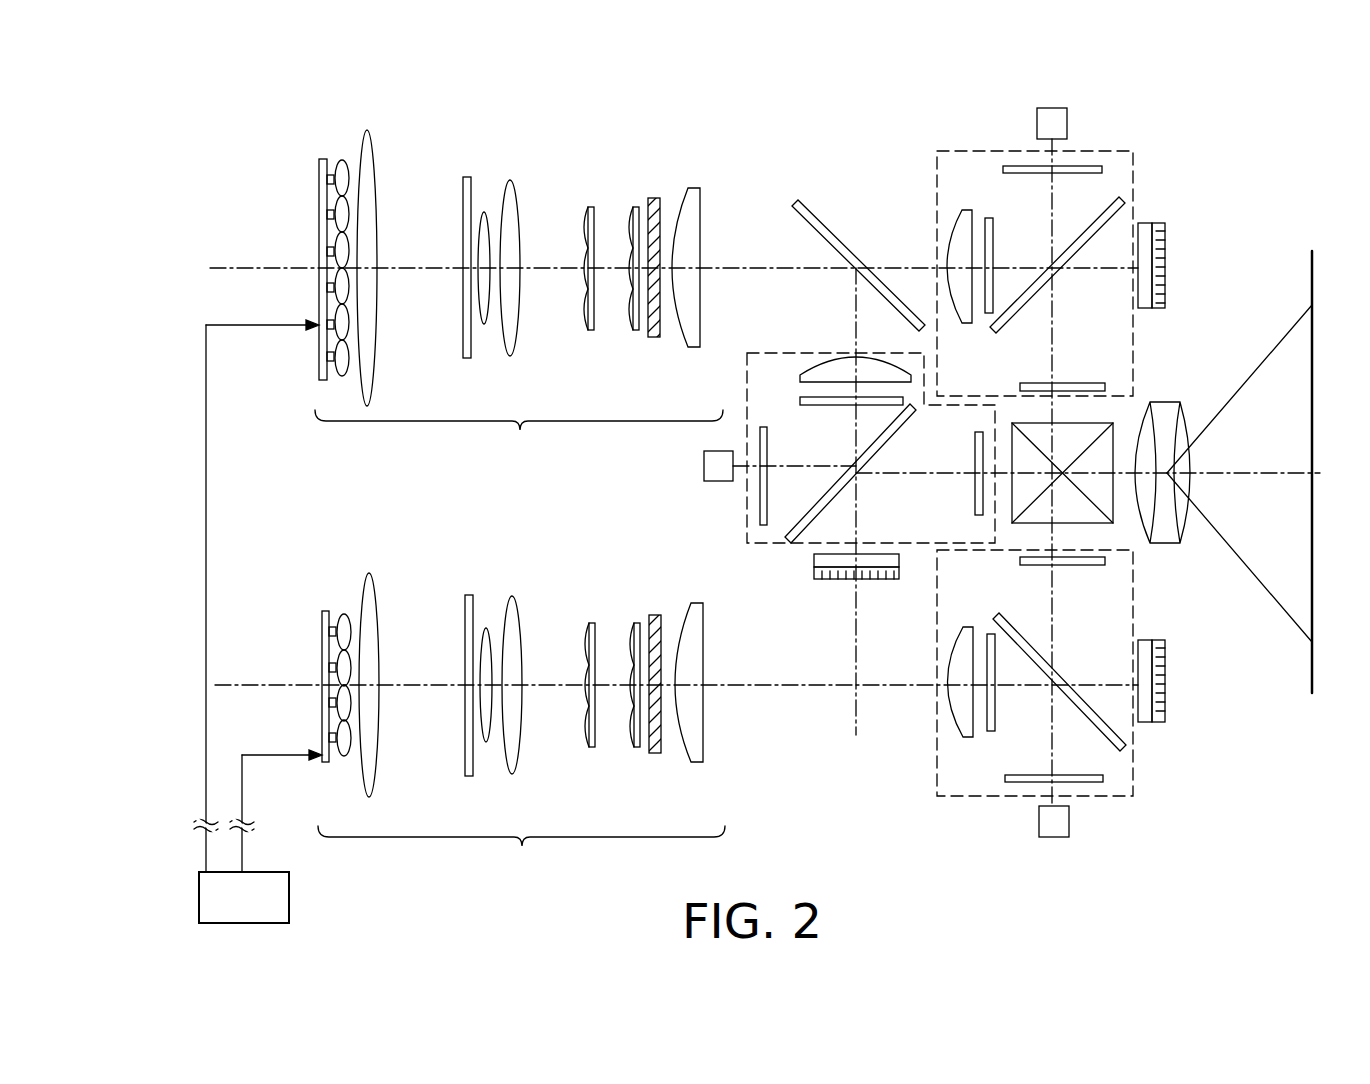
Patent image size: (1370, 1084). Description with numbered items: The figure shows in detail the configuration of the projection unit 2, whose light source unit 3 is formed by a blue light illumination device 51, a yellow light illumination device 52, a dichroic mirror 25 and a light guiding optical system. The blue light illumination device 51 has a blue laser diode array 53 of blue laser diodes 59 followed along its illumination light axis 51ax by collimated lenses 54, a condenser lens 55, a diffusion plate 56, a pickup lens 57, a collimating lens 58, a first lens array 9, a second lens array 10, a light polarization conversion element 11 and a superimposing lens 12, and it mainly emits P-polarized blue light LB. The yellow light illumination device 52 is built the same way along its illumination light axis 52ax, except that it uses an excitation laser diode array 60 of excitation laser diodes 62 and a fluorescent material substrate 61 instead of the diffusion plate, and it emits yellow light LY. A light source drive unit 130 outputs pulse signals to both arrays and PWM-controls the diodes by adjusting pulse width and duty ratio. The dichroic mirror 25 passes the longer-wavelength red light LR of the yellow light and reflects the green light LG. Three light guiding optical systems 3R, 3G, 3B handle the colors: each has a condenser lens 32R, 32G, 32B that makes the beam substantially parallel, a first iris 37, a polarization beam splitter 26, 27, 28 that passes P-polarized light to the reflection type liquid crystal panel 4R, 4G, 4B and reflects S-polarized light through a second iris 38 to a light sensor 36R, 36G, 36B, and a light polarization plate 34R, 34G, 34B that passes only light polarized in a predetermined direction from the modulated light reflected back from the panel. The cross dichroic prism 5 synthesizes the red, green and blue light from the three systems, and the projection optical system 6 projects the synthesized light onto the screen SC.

The projection unit 2 is at (1244, 140).
The light source unit 3 is at (280, 546).
The cross dichroic prism 5 is at (1105, 425).
The projection optical system 6 is at (1165, 402).
The first lens array 9 is at (590, 332).
The second lens array 10 is at (636, 332).
The light polarization conversion element 11 is at (654, 197).
The superimposing lens 12 is at (692, 192).
The dichroic mirror 25 is at (817, 208).
The polarization beam splitter 26 is at (1030, 300).
The light polarization beam splitter 27 is at (906, 425).
The light polarization beam splitter 28 is at (1022, 640).
The light guiding optical system 3R is at (958, 150).
The light guiding optical system 3G is at (772, 545).
The light guiding optical system 3B is at (975, 800).
The reflection type liquid crystal panel 4R is at (1144, 224).
The reflection type liquid crystal panel 4G is at (898, 567).
The reflection type liquid crystal panel 4B is at (1146, 640).
The condenser lens 32R is at (958, 210).
The condenser lens 32G is at (820, 368).
The condenser lens 32B is at (963, 630).
The light polarization plate 34R is at (1080, 383).
The light polarization plate 34G is at (975, 493).
The light polarization plate 34B is at (1086, 566).
The light sensor 36R is at (1037, 124).
The light sensor 36G is at (718, 470).
The light sensor 36B is at (1055, 832).
The first iris 37 is at (995, 238).
The second iris 38 is at (1068, 173).
The blue light illumination device 51 is at (478, 703).
The yellow light illumination device 52 is at (477, 470).
The illumination light axis 51ax is at (257, 684).
The illumination light axis 52ax is at (232, 266).
The blue laser diode array 53 is at (308, 707).
The collimated lenses 54 is at (348, 192).
The condenser lens 55 is at (368, 385).
The diffusion plate 56 is at (468, 595).
The pickup lens 57 is at (487, 325).
The collimating lens 58 is at (508, 180).
The blue laser diode 59 is at (332, 631).
The excitation laser diode array 60 is at (308, 289).
The fluorescent material substrate 61 is at (467, 177).
The excitation laser diode 62 is at (330, 213).
The light source drive unit 130 is at (290, 908).
The yellow light LY is at (737, 266).
The red light LR is at (907, 266).
The green light LG is at (852, 300).
The blue light LB is at (802, 688).
The screen SC is at (1308, 662).